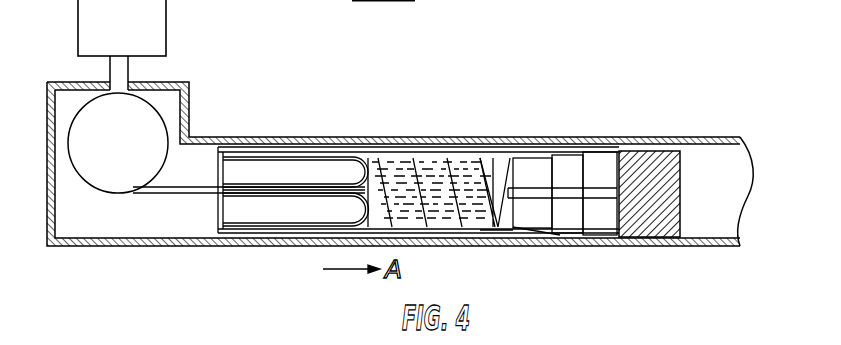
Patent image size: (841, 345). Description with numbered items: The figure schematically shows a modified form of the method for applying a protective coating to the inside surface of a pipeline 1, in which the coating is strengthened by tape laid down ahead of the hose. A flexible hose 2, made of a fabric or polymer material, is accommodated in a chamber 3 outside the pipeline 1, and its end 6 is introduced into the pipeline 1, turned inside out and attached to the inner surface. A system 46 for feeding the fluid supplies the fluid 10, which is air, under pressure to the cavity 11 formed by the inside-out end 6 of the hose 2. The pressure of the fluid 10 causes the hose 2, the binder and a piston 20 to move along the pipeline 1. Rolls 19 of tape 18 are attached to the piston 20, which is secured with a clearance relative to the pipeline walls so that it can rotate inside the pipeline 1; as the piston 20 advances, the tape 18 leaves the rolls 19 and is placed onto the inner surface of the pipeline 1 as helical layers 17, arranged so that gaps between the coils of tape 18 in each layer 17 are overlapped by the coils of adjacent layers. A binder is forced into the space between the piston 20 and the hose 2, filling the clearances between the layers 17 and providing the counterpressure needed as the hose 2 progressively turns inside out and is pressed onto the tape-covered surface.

The pipeline 1 is at (212, 139).
The flexible hose 2 is at (185, 196).
The chamber 3 is at (113, 246).
The end of the flexible hose 6 is at (233, 157).
The fluid 10 is at (75, 222).
The cavity 11 is at (313, 173).
The helical layers 17 is at (382, 157).
The tape 18 is at (484, 222).
The rolls of tape 19 is at (598, 168).
The piston 20 is at (655, 160).
The system for feeding the fluid 46 is at (87, 25).